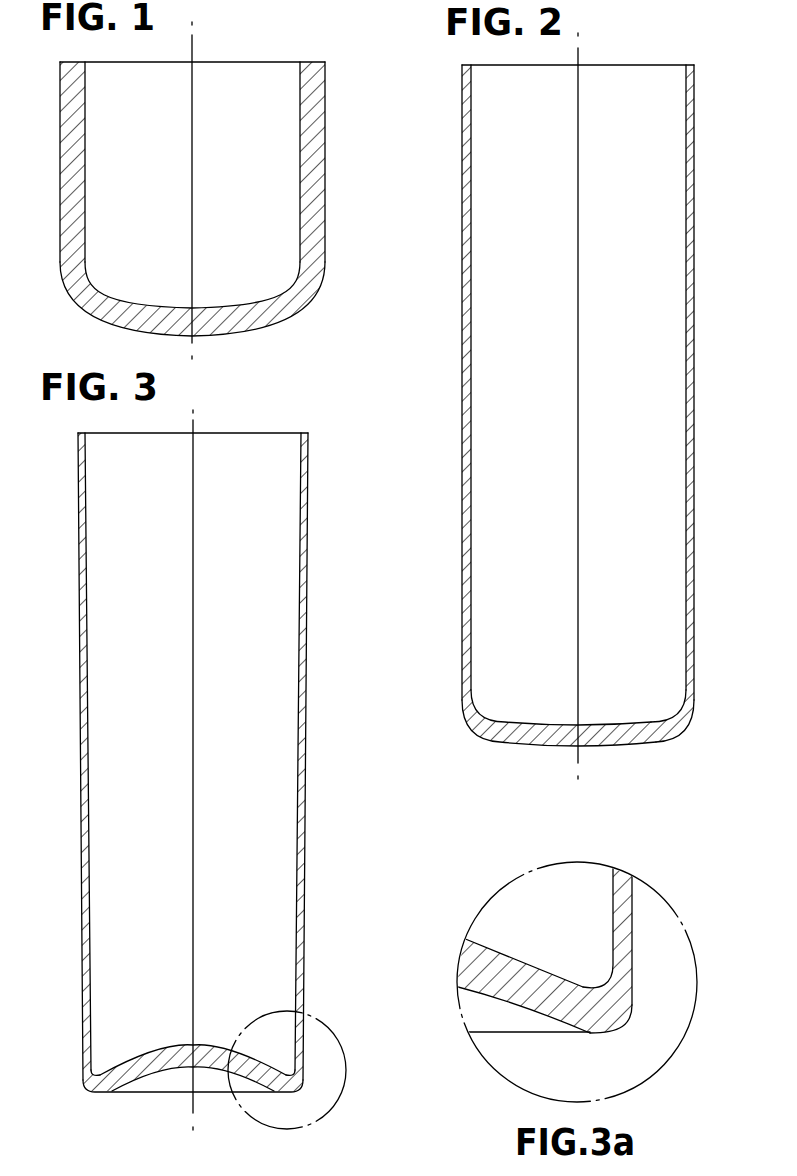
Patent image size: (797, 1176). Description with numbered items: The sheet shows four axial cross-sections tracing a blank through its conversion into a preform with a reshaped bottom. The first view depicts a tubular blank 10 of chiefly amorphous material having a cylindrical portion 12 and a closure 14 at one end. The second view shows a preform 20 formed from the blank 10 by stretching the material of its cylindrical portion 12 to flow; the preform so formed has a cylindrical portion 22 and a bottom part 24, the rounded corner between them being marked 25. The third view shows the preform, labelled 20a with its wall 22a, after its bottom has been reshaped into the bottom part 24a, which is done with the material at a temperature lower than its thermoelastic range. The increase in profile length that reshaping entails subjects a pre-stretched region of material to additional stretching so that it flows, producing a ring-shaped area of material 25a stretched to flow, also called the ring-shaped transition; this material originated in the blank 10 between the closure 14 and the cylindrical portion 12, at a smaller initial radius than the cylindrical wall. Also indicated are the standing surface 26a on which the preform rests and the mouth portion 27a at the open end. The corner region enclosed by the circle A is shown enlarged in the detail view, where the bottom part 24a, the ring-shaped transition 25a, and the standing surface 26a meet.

In FIG. 1, the tubular blank 10 is at (216, 214).
In FIG. 1, the cylindrical portion 12 is at (313, 240).
In FIG. 1, the closure 14 is at (233, 327).
In FIG. 2, the preform 20 is at (544, 405).
In FIG. 2, the cylindrical portion 22 is at (467, 307).
In FIG. 2, the bottom part 24 is at (515, 718).
In FIG. 2, the corner 25 is at (687, 695).
In FIG. 3, the container 20a is at (248, 767).
In FIG. 3, the side wall 22a is at (308, 808).
In FIG. 3, the reshaped bottom part 24a is at (150, 1057).
In FIG. 3A, the reshaped bottom part 24a is at (517, 962).
In FIG. 3, the ring-shaped area of material stretched to flow 25a is at (297, 1073).
In FIG. 3A, the ring-shaped area of material stretched to flow 25a is at (612, 980).
In FIG. 3, the standing surface 26a is at (290, 1094).
In FIG. 3A, the standing surface 26a is at (588, 1035).
In FIG. 3, the mouth portion 27a is at (270, 442).
In FIG. 3, the area A is at (328, 1028).